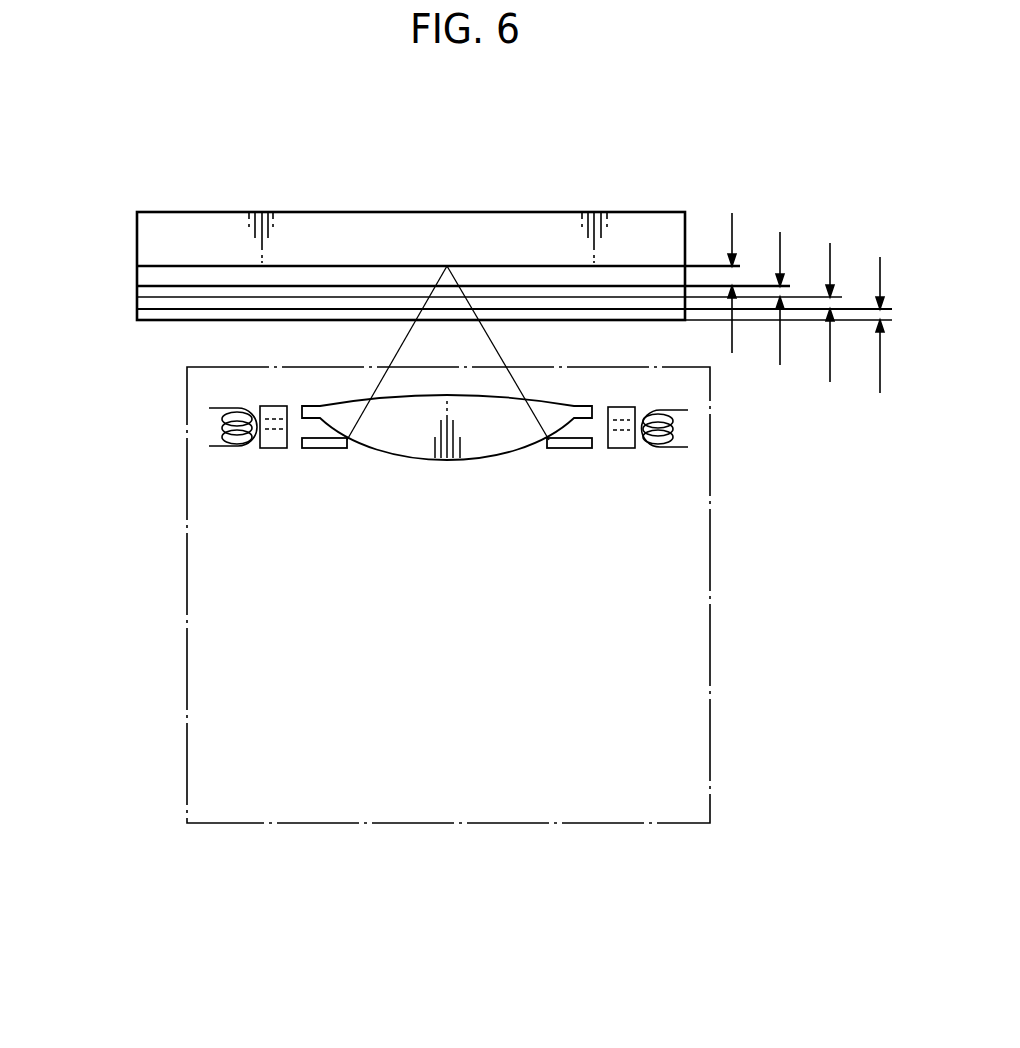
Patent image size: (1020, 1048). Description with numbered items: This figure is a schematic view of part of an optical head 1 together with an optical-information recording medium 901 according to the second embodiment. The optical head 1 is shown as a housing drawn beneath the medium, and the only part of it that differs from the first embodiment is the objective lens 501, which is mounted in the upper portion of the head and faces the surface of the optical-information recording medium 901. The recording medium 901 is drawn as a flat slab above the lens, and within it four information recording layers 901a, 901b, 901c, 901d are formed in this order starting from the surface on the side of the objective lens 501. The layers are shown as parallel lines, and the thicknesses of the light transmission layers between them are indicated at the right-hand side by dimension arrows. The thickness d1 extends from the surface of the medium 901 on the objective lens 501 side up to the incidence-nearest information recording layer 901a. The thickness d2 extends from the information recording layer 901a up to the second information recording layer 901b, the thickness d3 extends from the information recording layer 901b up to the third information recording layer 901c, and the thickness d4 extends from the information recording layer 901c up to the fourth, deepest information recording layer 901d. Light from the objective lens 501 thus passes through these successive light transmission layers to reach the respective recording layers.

The optical head 1 is at (710, 532).
The objective lens 501 is at (553, 405).
The optical-information recording medium 901 is at (167, 320).
The information recording layer 901a is at (147, 307).
The second information recording layer 901b is at (147, 290).
The third information recording layer 901c is at (147, 282).
The fourth information recording layer 901d is at (147, 266).
The thickness of the light transmission layer d1 is at (894, 325).
The thickness of the light transmission layer d2 is at (844, 312).
The thickness of the light transmission layer d3 is at (795, 299).
The thickness of the light transmission layer d4 is at (746, 289).